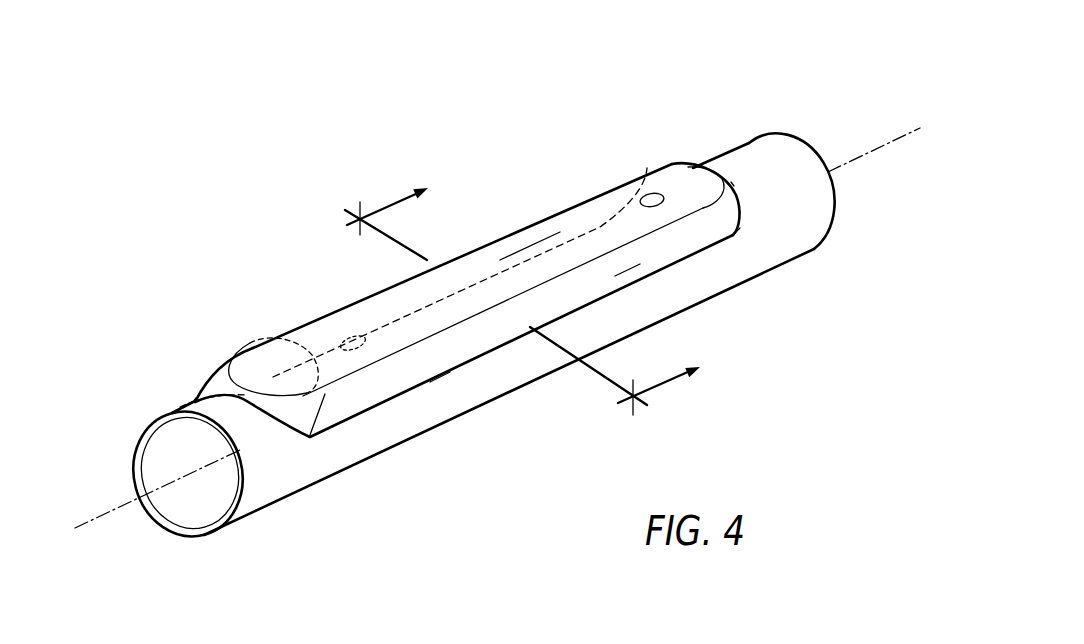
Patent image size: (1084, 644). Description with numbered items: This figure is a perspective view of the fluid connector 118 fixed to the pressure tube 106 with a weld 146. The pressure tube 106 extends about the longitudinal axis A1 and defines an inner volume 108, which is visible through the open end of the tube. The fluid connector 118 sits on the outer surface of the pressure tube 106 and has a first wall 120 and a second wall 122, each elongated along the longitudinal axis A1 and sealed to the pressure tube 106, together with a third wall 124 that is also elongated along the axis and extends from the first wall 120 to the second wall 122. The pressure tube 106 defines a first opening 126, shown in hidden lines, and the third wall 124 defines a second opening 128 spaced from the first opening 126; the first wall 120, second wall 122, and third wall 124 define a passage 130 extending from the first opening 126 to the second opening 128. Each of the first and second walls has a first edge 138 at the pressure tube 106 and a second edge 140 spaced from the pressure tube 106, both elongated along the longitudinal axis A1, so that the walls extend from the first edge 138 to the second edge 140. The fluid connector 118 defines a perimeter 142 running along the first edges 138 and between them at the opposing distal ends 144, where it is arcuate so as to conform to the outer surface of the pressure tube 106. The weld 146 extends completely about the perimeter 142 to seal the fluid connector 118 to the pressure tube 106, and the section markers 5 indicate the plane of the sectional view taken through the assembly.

The pressure tube 106 is at (713, 263).
The inner volume 108 is at (166, 455).
The fluid connector 118 is at (583, 208).
The first wall 120 is at (252, 342).
The second wall 122 is at (627, 270).
The third wall 124 is at (533, 237).
The first opening 126 is at (343, 338).
The second opening 128 is at (647, 193).
The passage 130 is at (446, 317).
The first edge 138 is at (495, 274).
The second edge 140 is at (377, 290).
The perimeter 142 is at (736, 233).
The distal ends 144 is at (193, 400).
The weld 146 is at (440, 377).
The longitudinal axis A1 is at (858, 155).
The section line 5- 5 is at (513, 303).